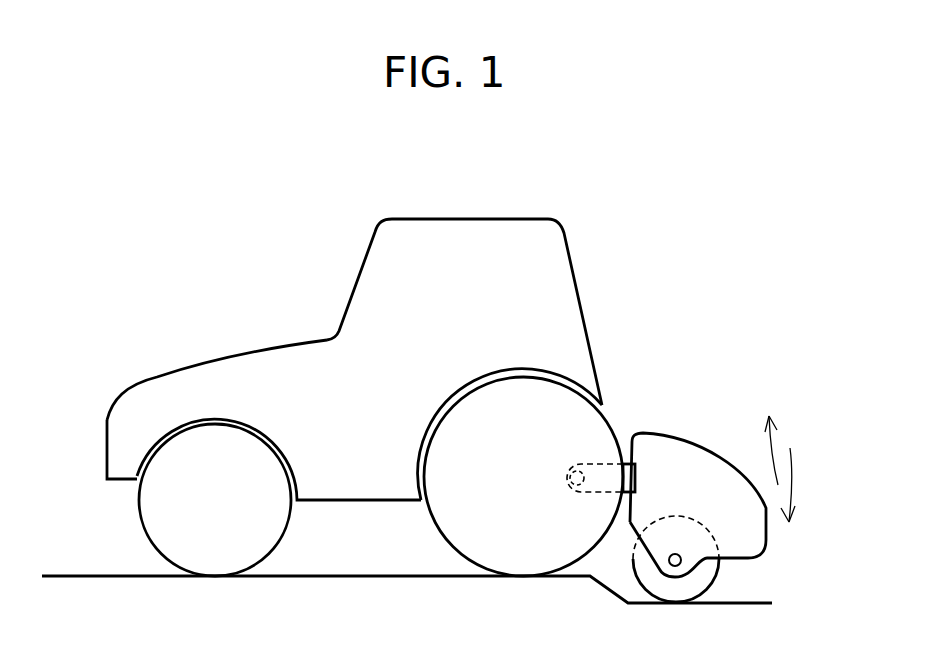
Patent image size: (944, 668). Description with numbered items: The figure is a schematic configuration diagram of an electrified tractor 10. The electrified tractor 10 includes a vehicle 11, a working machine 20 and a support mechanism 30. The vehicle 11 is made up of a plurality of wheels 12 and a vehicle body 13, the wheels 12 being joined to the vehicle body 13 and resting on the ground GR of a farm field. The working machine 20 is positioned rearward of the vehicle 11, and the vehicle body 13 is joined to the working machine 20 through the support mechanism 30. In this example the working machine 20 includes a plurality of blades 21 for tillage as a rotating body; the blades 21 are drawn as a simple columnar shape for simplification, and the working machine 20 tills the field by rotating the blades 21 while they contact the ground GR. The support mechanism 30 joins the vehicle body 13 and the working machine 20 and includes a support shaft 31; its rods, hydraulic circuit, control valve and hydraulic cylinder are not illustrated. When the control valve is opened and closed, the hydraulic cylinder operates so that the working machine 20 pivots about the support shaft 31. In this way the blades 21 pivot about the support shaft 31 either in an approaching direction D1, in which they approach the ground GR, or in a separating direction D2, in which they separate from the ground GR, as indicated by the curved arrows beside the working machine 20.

The electrified tractor 10 is at (173, 223).
The vehicle 11 is at (317, 316).
The wheels 12 is at (150, 518).
The vehicle body 13 is at (190, 366).
The working machine 20 is at (711, 421).
The blades 21 is at (700, 577).
The support mechanism 30 is at (564, 460).
The support shaft 31 is at (568, 476).
The ground GR is at (341, 575).
The approaching direction D1 is at (793, 478).
The separating direction D2 is at (773, 440).